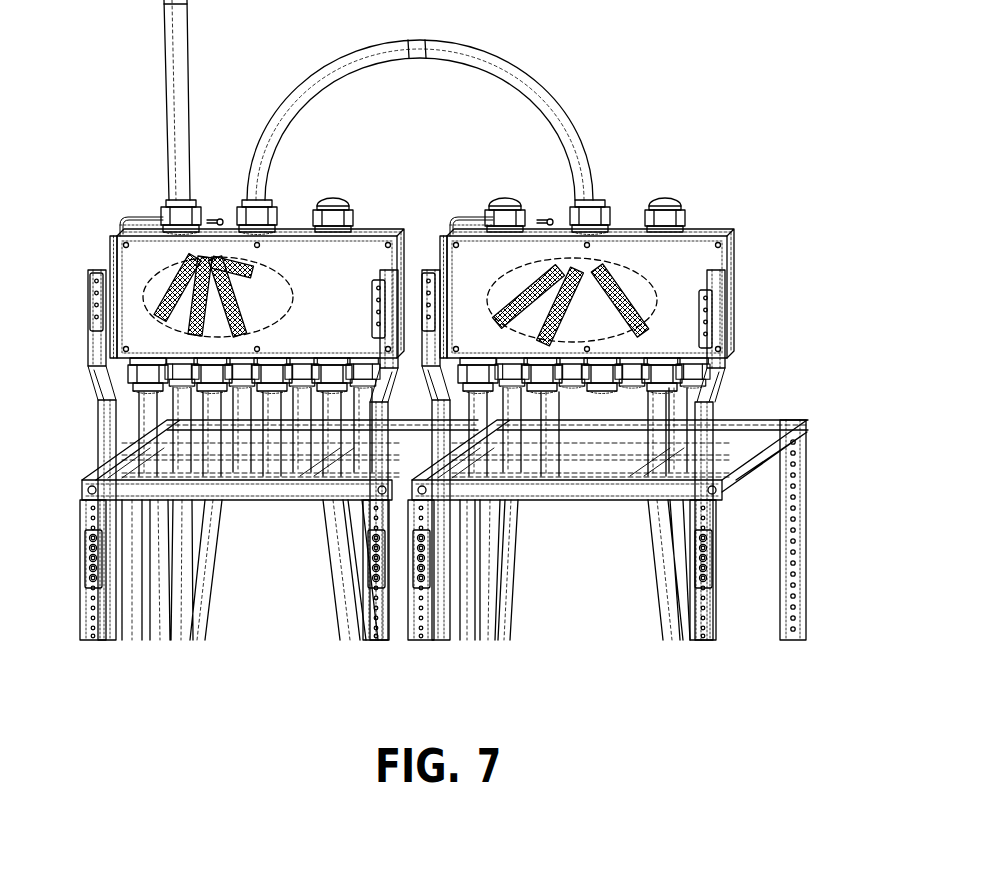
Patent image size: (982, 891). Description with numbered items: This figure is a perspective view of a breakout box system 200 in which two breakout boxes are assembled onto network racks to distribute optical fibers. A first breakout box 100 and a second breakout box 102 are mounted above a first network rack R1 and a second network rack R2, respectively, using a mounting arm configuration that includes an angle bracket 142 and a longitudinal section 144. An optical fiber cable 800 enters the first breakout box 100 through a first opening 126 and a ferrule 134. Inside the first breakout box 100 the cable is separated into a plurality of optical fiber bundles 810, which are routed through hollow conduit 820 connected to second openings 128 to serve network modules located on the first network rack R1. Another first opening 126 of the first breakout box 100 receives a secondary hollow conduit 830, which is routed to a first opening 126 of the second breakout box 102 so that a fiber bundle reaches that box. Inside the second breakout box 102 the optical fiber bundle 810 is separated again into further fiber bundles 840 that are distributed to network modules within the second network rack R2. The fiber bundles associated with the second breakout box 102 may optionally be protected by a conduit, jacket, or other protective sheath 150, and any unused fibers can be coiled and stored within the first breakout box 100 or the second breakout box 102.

The first breakout box 100 is at (135, 264).
The second breakout box 102 is at (460, 266).
The first opening 126 is at (190, 199).
The second openings 128 is at (145, 356).
The ferrule 134 is at (165, 200).
The angle bracket 142 is at (713, 287).
The longitudinal section 144 is at (713, 377).
The protective sheath 150 is at (648, 316).
The breakout box system 200 is at (664, 62).
The optical fiber cable 800 is at (178, 70).
The optical fiber bundles 810 is at (160, 312).
The hollow conduit 820 is at (340, 562).
The secondary hollow conduit 830 is at (375, 55).
The fiber bundles 840 is at (620, 297).
The first network rack R1 is at (88, 506).
The second network rack R2 is at (790, 494).